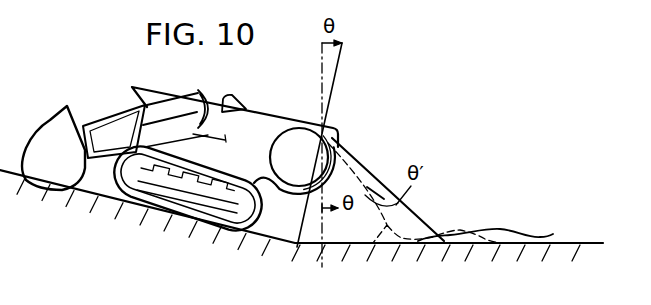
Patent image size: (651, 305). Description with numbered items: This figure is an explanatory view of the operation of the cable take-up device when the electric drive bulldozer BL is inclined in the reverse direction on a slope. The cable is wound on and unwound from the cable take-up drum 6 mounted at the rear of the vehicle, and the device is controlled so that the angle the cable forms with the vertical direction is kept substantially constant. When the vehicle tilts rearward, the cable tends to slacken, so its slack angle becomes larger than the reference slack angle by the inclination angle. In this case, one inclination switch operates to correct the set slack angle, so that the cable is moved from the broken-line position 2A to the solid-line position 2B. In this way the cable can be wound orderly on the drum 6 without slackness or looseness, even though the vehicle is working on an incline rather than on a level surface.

The electric drive bulldozer BL is at (92, 107).
The cable take-up drum 6 is at (292, 138).
The corrected cable position 2B is at (361, 165).
The uncorrected cable position 2A is at (383, 246).